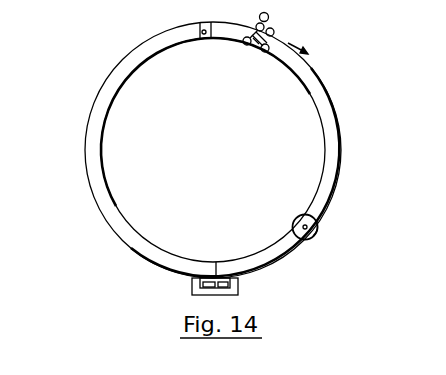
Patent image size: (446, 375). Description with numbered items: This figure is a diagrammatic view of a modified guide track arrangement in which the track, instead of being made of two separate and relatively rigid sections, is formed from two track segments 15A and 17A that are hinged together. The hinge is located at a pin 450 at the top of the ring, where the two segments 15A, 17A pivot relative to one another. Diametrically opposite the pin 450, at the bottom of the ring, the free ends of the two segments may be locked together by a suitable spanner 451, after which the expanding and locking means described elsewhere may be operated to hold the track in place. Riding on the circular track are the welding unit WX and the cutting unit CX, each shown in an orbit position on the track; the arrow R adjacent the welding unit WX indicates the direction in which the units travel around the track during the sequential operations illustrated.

The track segment 17A is at (85, 151).
The track segment 15A is at (344, 163).
The pin 450 is at (205, 29).
The spanner 451 is at (238, 281).
The welding unit WX is at (273, 31).
The direction of rotation R is at (305, 54).
The cutting unit CX is at (318, 234).